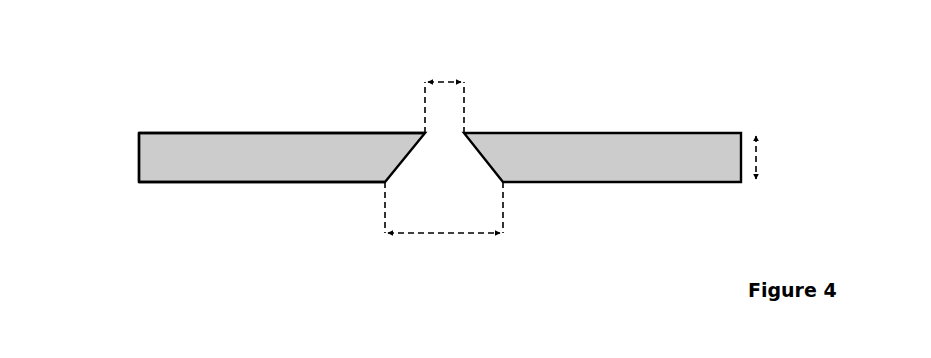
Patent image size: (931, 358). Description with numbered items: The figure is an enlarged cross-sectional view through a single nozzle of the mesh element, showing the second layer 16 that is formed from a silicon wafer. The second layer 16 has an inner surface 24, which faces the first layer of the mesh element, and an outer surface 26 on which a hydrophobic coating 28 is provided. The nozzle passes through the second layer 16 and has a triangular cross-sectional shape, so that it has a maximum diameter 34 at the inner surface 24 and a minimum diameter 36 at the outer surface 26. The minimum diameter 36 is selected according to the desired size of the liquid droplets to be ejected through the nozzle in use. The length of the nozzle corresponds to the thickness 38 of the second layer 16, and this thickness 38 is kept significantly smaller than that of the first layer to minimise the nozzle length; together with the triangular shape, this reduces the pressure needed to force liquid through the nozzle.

The second layer 16 is at (700, 152).
The inner surface 24 is at (168, 182).
The outer surface 26 is at (172, 132).
The hydrophobic coating 28 is at (223, 131).
The maximum diameter 34 is at (441, 234).
The minimum diameter 36 is at (446, 82).
The thickness 38 is at (756, 155).